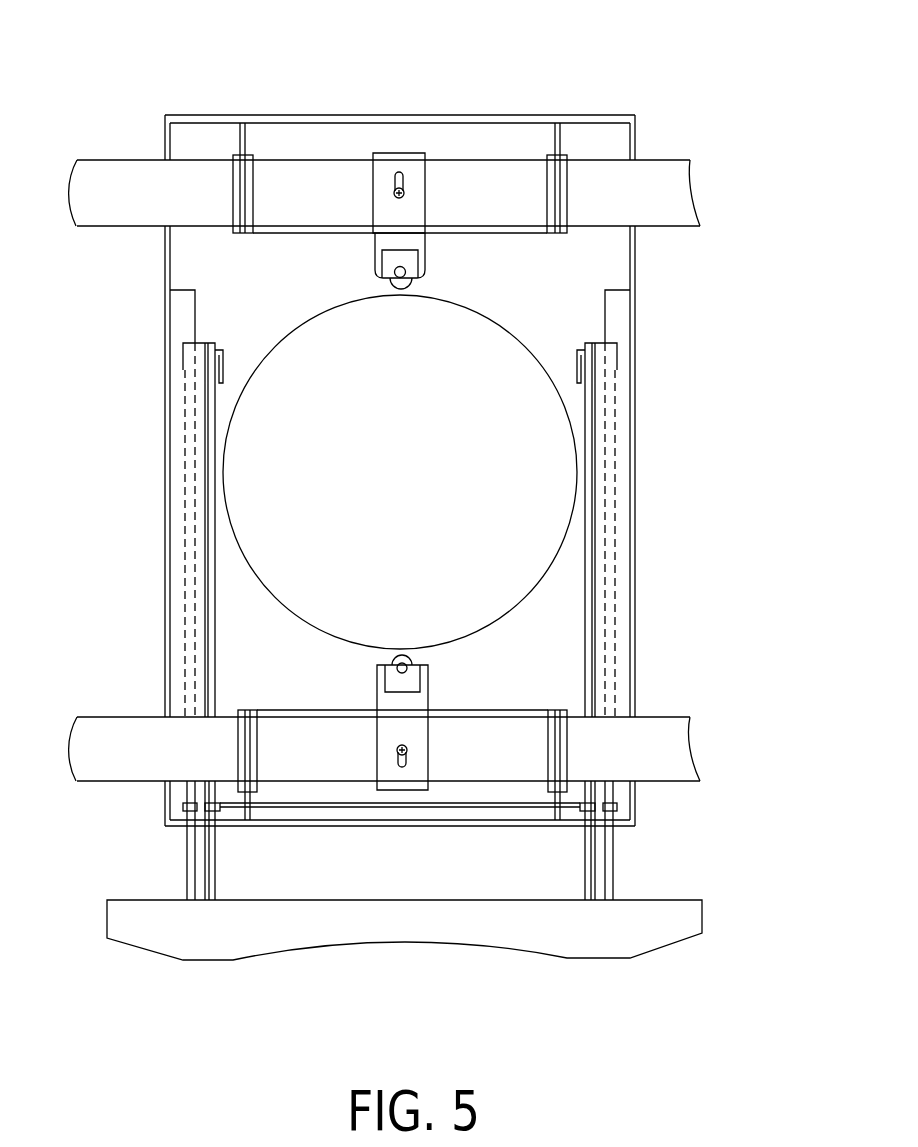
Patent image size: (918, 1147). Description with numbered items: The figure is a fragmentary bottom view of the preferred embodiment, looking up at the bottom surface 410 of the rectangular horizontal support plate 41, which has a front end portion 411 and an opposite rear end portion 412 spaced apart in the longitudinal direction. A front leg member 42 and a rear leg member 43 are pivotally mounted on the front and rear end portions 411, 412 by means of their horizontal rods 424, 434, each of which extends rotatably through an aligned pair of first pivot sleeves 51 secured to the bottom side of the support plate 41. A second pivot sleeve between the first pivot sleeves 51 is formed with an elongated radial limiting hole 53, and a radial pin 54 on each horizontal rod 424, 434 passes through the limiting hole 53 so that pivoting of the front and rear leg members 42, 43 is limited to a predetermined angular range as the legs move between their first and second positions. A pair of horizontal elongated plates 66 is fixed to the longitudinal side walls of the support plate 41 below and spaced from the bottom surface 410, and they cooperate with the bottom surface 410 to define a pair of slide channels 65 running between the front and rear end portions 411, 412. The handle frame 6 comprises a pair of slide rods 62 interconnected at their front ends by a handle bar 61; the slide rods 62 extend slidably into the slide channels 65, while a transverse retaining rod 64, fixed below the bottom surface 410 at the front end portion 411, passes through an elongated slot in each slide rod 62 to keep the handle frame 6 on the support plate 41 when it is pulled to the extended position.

The handle frame 6 is at (636, 962).
The support plate 41 is at (637, 595).
The bottom surface 410 is at (575, 565).
The front end portion 411 is at (305, 826).
The rear end portion 412 is at (343, 117).
The front leg member 42 is at (650, 717).
The horizontal rod 424 is at (502, 763).
The rear leg member 43 is at (640, 228).
The horizontal rod 434 is at (596, 190).
The first pivot sleeves 51 is at (243, 188).
The limiting hole 53 is at (399, 188).
The radial pin 54 is at (410, 193).
The handle bar 61 is at (415, 927).
The slide rods 62 is at (185, 848).
The retaining rod 64 is at (390, 808).
The slide channels 65 is at (183, 398).
The elongated plates 66 is at (182, 312).